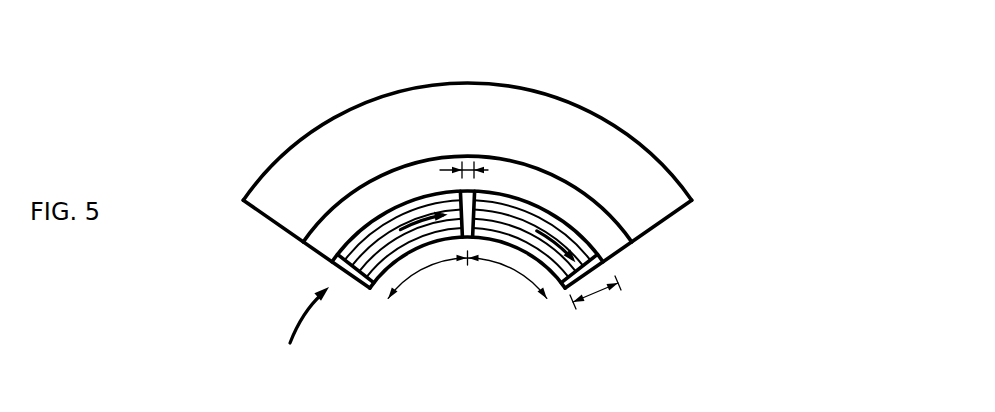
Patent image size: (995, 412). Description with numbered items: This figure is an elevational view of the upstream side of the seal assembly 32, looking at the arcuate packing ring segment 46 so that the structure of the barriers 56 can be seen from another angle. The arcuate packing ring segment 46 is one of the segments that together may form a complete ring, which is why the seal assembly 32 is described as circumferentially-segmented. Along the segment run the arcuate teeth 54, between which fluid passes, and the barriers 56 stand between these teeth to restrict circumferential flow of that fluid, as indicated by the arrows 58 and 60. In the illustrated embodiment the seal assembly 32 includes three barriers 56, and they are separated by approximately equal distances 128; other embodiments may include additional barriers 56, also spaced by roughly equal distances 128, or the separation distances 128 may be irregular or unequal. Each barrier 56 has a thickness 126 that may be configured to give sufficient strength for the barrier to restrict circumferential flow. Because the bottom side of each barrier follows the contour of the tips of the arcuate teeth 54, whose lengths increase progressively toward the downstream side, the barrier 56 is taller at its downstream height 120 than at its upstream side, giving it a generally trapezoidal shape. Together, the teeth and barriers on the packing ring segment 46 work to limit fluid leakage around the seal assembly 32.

The seal assembly 32 is at (737, 116).
The arcuate packing ring segment 46 is at (620, 249).
The arcuate teeth 54 is at (384, 252).
The arrow 58 is at (423, 212).
The barrier 56 is at (476, 190).
The arrow 60 is at (573, 258).
The thickness 126 is at (468, 172).
The distance 128 is at (502, 271).
The downstream height 120 is at (596, 294).